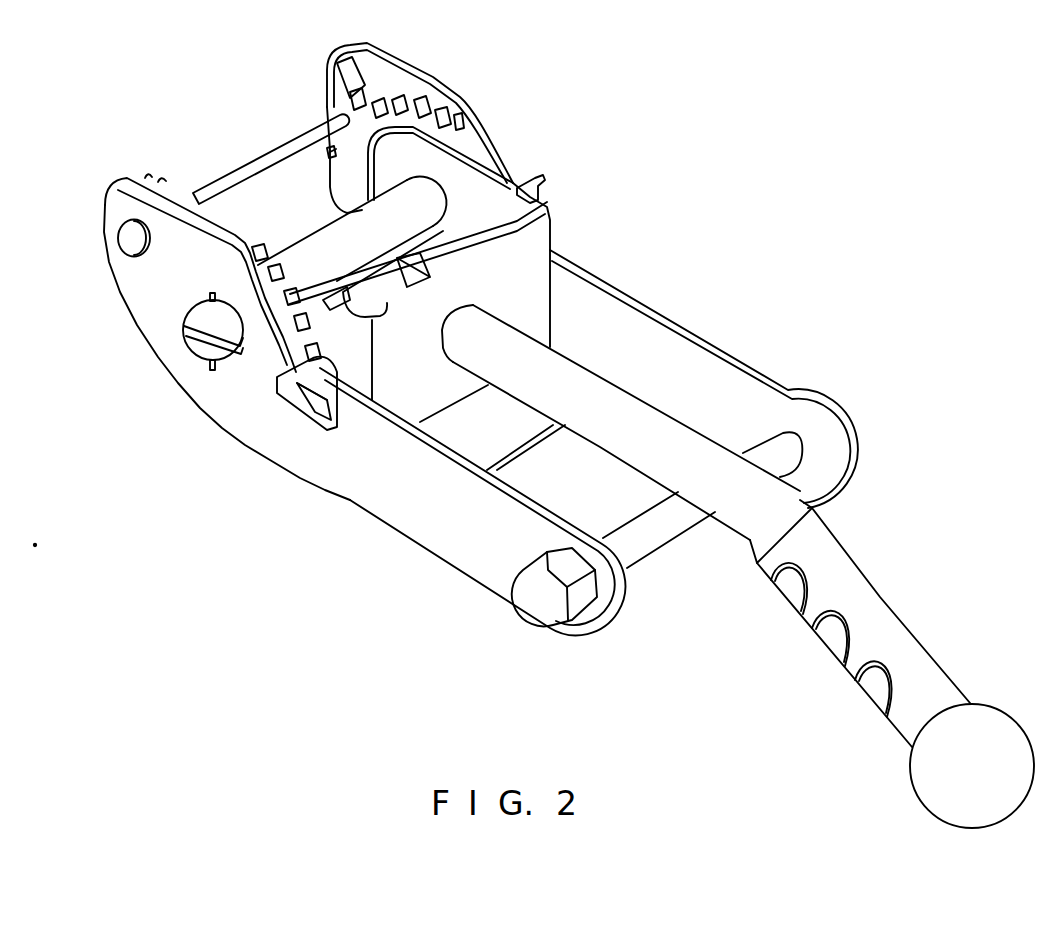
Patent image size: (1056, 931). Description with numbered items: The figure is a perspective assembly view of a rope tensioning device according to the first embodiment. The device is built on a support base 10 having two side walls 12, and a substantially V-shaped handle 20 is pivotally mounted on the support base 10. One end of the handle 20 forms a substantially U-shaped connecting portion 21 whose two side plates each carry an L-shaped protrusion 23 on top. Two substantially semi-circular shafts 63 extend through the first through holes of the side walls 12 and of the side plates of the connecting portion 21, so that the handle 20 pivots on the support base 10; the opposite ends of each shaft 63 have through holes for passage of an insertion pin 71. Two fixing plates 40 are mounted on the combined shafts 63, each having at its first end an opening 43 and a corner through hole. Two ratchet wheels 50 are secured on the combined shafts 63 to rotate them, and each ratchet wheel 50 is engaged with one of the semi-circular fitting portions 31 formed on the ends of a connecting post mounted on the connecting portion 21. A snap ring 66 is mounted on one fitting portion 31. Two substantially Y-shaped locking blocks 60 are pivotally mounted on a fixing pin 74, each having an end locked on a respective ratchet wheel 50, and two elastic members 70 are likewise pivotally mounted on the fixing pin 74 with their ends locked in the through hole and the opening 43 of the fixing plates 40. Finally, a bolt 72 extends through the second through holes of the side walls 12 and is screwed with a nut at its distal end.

The support base 10 is at (757, 311).
The side walls 12 is at (662, 318).
The handle 20 is at (710, 453).
The connecting portion 21 is at (540, 273).
The L-shaped protrusion 23 is at (540, 177).
The fitting portions 31 is at (283, 397).
The fixing plates 40 is at (358, 133).
The opening 43 is at (330, 152).
The ratchet wheels 50 is at (442, 110).
The locking blocks 60 is at (343, 90).
The shafts 63 is at (195, 315).
The snap ring 66 is at (315, 412).
The elastic members 70 is at (328, 154).
The insertion pins 71 is at (213, 371).
The bolt 72 is at (652, 543).
The fixing pin 74 is at (253, 160).